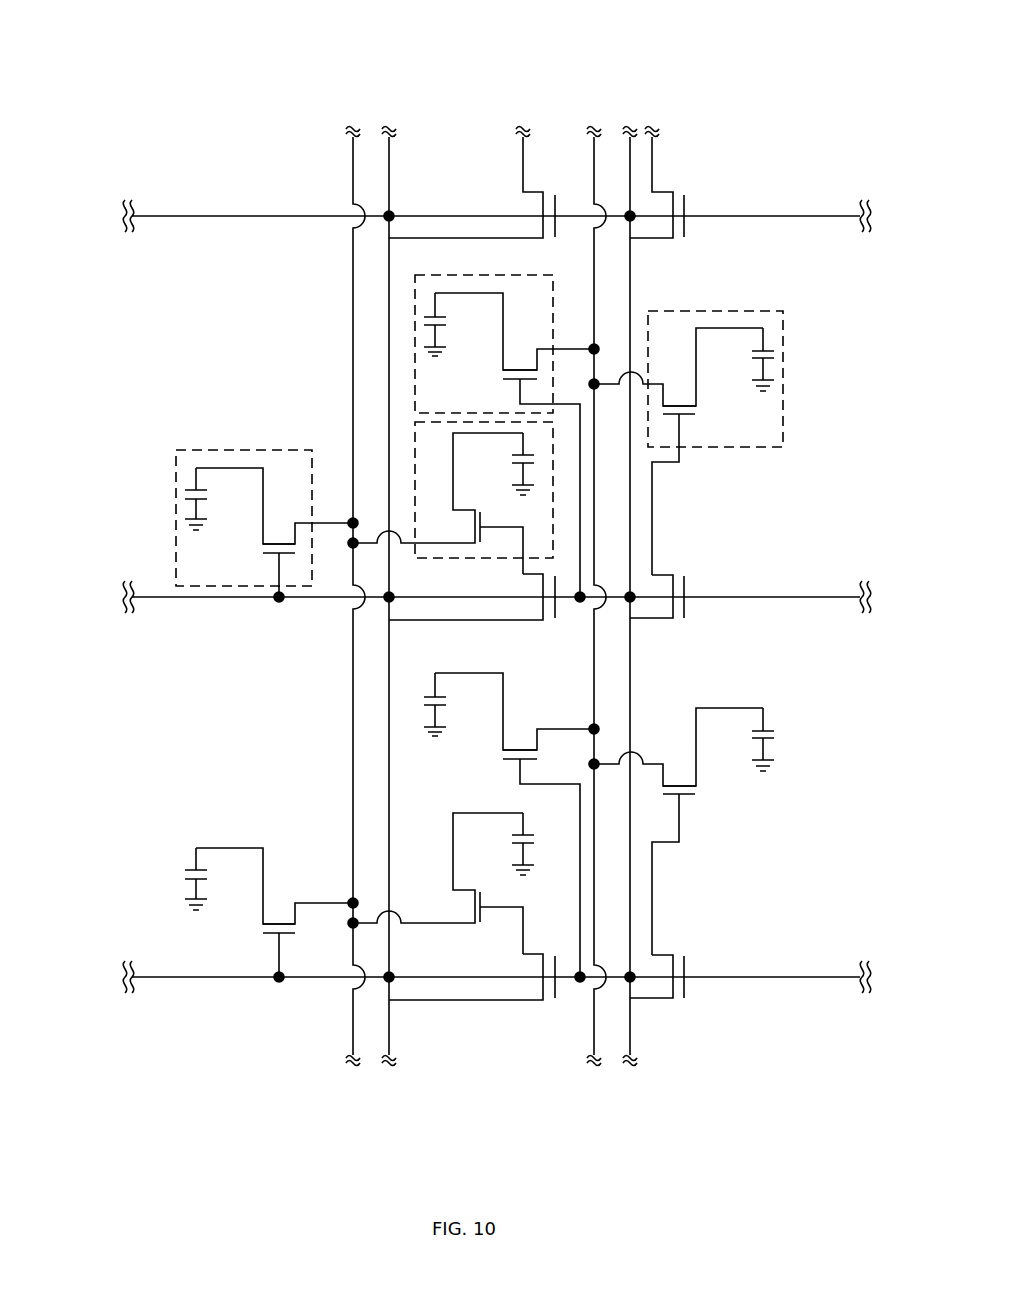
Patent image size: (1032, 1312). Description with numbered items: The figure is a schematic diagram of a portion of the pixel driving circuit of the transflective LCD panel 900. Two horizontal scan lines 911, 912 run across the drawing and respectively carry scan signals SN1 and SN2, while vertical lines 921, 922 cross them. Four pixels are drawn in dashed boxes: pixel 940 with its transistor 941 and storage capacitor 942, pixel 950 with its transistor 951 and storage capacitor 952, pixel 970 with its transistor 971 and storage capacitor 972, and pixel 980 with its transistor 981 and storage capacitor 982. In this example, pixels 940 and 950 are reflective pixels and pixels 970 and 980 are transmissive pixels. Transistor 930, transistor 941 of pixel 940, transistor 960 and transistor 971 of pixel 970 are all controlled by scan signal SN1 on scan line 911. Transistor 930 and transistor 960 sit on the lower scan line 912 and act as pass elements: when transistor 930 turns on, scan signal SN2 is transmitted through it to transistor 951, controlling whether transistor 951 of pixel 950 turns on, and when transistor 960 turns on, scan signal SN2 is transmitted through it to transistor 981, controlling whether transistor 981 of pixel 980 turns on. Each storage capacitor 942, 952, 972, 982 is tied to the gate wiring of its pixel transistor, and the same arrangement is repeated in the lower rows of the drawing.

The transflective LCD panel 900 is at (97, 30).
The scan line 911 is at (207, 598).
The scan line 912 is at (203, 978).
The data line 921 is at (353, 170).
The data line 922 is at (594, 170).
The transistor 930 is at (554, 608).
The pixel 940 is at (215, 526).
The transistor 941 is at (268, 553).
The storage capacitor 942 is at (194, 490).
The pixel 950 is at (416, 502).
The transistor 951 is at (484, 532).
The storage capacitor 952 is at (516, 466).
The transistor 960 is at (685, 585).
The pixel 970 is at (439, 434).
The transistor 971 is at (518, 381).
The storage capacitor 972 is at (433, 313).
The pixel 980 is at (743, 443).
The transistor 981 is at (681, 418).
The storage capacitor 982 is at (765, 346).